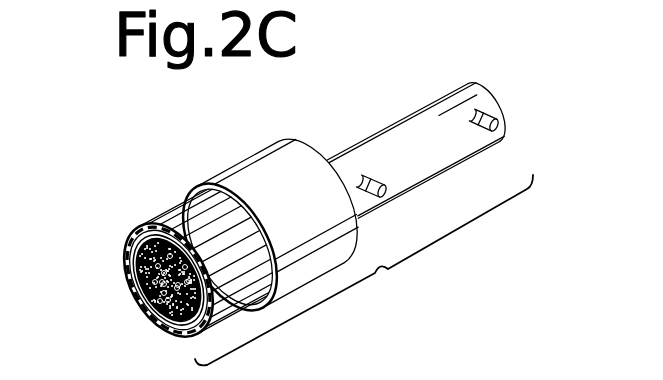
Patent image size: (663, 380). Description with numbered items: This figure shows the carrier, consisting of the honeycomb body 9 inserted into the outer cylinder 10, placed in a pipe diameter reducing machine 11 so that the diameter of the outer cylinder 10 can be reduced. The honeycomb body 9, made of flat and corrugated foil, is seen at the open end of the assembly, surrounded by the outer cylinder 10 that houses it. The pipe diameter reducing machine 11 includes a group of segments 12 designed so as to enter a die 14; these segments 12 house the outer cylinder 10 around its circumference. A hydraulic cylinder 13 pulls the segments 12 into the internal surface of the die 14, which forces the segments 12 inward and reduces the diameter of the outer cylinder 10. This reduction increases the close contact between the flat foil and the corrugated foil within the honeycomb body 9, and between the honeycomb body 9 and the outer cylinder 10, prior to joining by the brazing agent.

The honeycomb body 9 is at (135, 261).
The outer cylinder 10 is at (163, 335).
The pipe diameter reducing machine 11 is at (336, 270).
The segments 12 is at (137, 231).
The hydraulic cylinder 13 is at (420, 106).
The die 14 is at (293, 139).